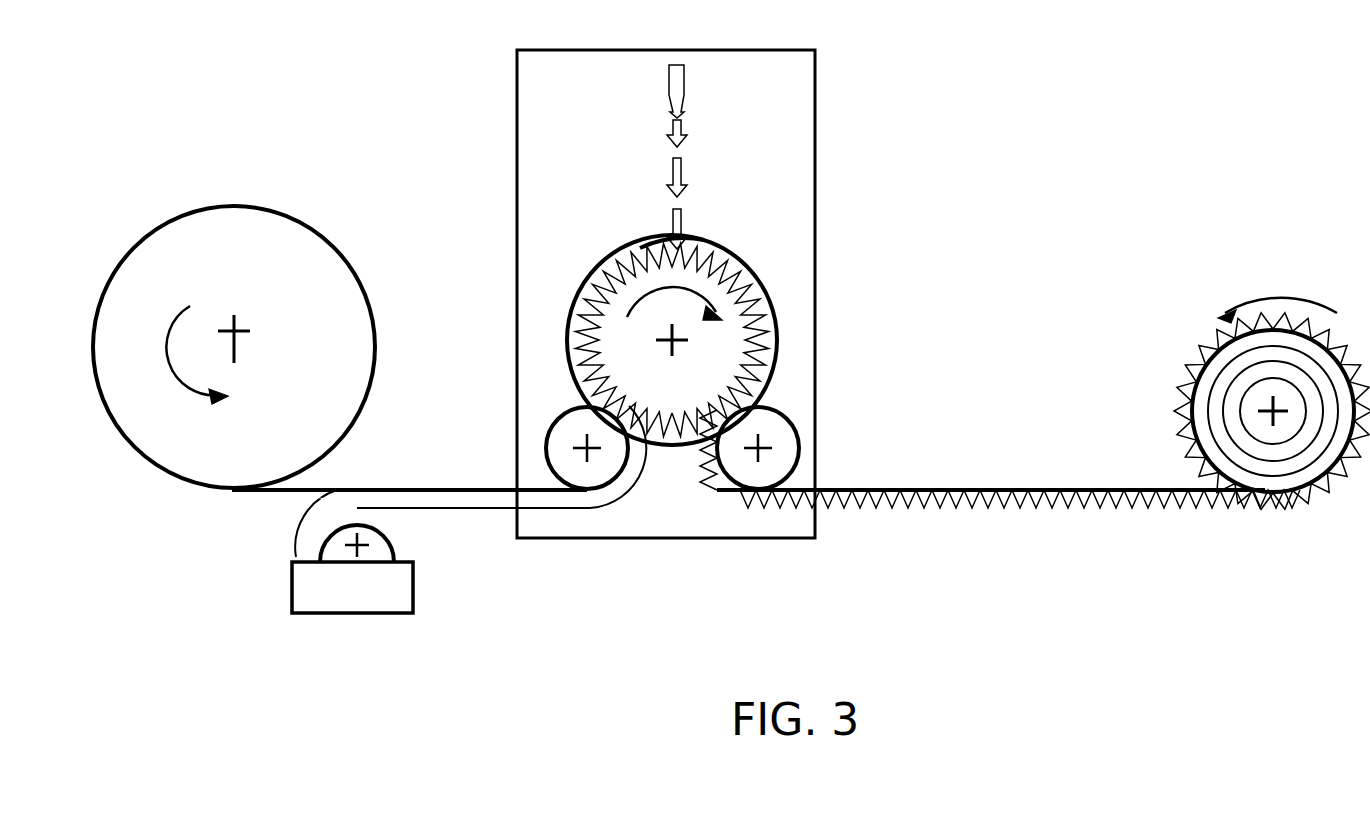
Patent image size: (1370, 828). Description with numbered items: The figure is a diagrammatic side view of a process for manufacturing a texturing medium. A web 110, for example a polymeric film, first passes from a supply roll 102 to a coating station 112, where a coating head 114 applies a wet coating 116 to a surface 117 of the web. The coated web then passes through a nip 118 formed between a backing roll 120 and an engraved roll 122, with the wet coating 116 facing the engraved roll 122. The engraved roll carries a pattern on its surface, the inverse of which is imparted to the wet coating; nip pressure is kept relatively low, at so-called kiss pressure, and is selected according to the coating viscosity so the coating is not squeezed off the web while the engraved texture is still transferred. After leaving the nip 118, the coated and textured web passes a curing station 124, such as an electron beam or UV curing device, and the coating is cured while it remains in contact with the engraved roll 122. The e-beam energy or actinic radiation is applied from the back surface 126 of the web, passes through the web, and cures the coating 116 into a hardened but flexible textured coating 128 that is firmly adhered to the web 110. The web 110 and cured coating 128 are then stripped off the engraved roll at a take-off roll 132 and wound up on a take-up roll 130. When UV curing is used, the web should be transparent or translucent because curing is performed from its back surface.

The supply roll 102 is at (330, 283).
The web 110 is at (276, 491).
The coating station 112 is at (317, 587).
The coating head 114 is at (357, 525).
The wet coating 116 is at (462, 497).
The surface of the web 117 is at (303, 492).
The nip 118 is at (575, 393).
The backing roll 120 is at (598, 478).
The engraved roll 122 is at (743, 283).
The curing station 124 is at (685, 85).
The back surface of the web 126 is at (705, 240).
The textured coating 128 is at (998, 498).
The take-up roll 130 is at (1230, 357).
The take-off roll 132 is at (785, 438).